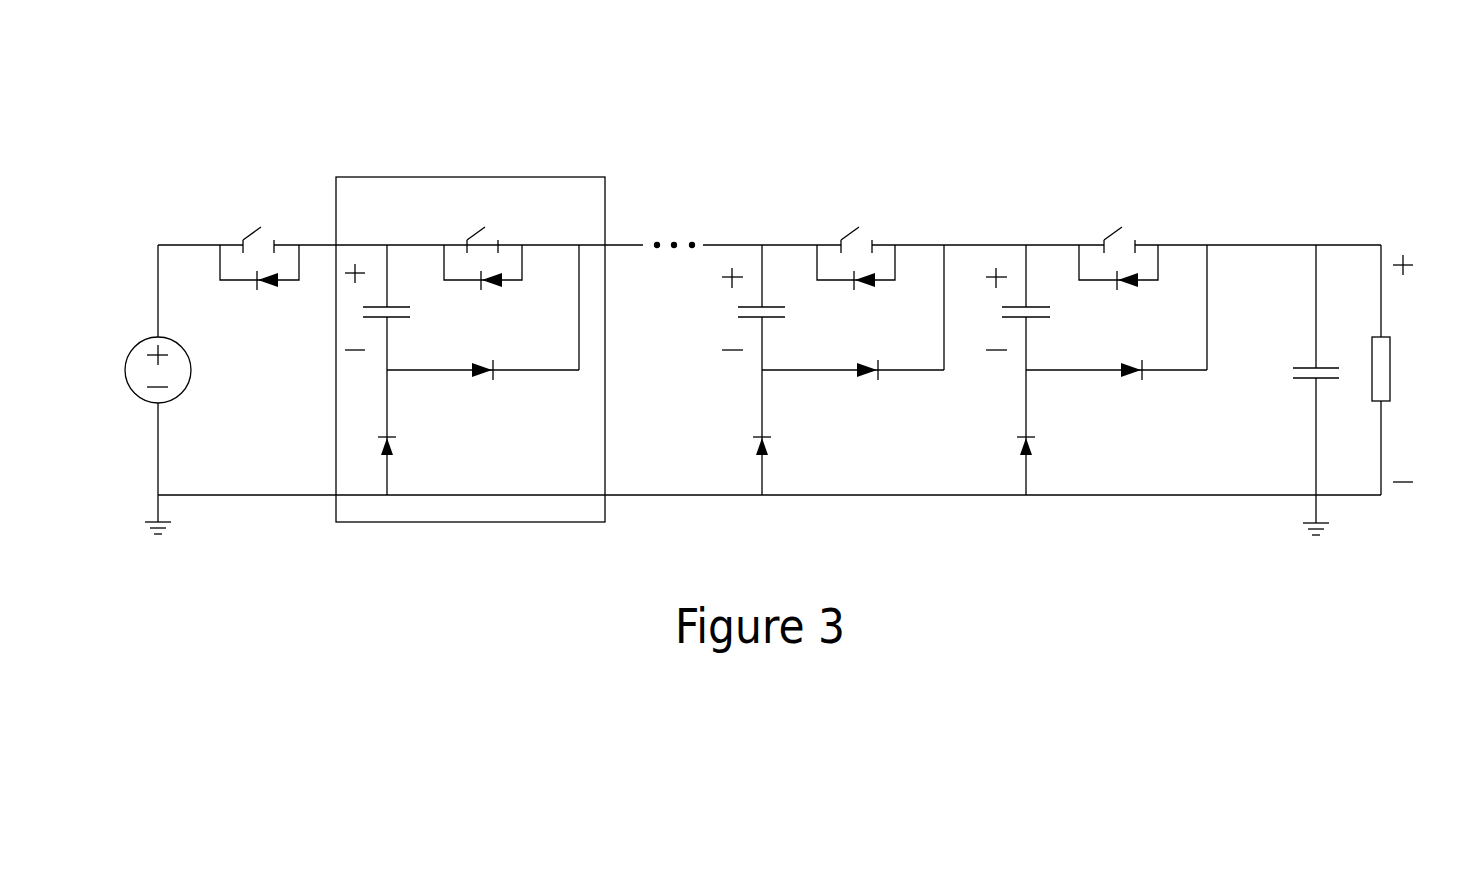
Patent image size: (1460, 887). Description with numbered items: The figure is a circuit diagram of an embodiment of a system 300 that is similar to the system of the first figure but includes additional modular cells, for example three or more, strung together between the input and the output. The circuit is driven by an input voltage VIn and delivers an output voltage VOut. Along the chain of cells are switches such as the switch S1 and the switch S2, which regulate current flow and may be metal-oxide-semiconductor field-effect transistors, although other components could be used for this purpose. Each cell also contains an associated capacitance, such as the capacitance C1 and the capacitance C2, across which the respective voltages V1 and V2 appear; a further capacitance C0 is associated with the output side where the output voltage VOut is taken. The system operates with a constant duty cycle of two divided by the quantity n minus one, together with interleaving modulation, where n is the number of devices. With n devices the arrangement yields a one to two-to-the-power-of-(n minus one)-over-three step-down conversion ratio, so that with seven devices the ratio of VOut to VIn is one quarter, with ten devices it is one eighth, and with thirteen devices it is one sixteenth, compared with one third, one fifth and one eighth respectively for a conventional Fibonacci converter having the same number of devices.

The system 300 is at (928, 80).
The switch S1 is at (1118, 240).
The switch S2 is at (856, 240).
The capacitance C1 is at (1043, 307).
The capacitance C2 is at (780, 307).
The capacitance C0 is at (1296, 390).
The voltage V1 is at (988, 309).
The voltage V2 is at (722, 309).
The input voltage VIn is at (136, 389).
The output voltage VOut is at (1414, 370).